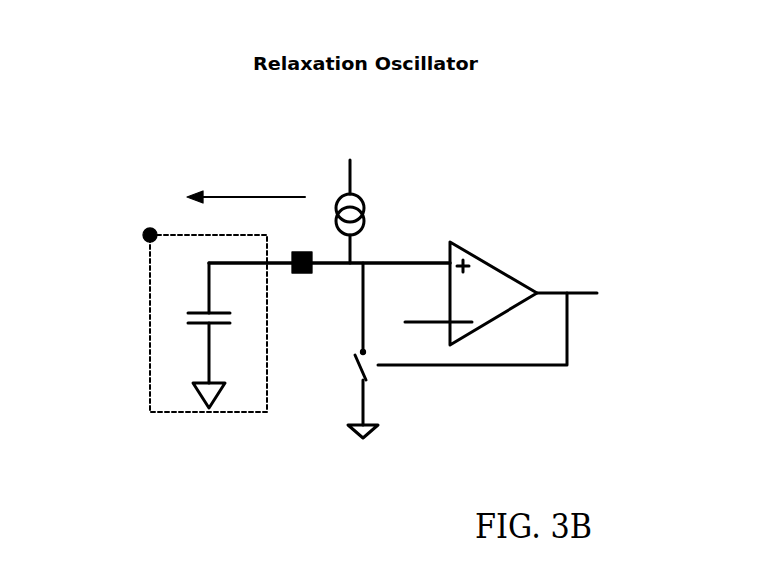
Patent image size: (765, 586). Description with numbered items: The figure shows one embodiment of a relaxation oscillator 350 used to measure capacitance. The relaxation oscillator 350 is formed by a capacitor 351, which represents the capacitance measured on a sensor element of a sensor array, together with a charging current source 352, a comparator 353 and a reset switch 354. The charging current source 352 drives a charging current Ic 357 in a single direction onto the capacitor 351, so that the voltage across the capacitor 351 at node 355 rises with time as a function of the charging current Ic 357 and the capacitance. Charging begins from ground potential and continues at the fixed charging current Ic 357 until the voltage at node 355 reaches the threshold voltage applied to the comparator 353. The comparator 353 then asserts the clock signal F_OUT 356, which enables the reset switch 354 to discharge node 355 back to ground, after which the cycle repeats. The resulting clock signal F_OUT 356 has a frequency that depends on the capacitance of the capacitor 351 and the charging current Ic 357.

The relaxation oscillator 350 is at (551, 135).
The capacitor 351 is at (150, 400).
The charging current source 352 is at (361, 195).
The comparator 353 is at (497, 268).
The reset switch 354 is at (367, 402).
The node 355 is at (143, 236).
The clock signal F_OUT 356 is at (572, 262).
The charging current Ic 357 is at (246, 185).